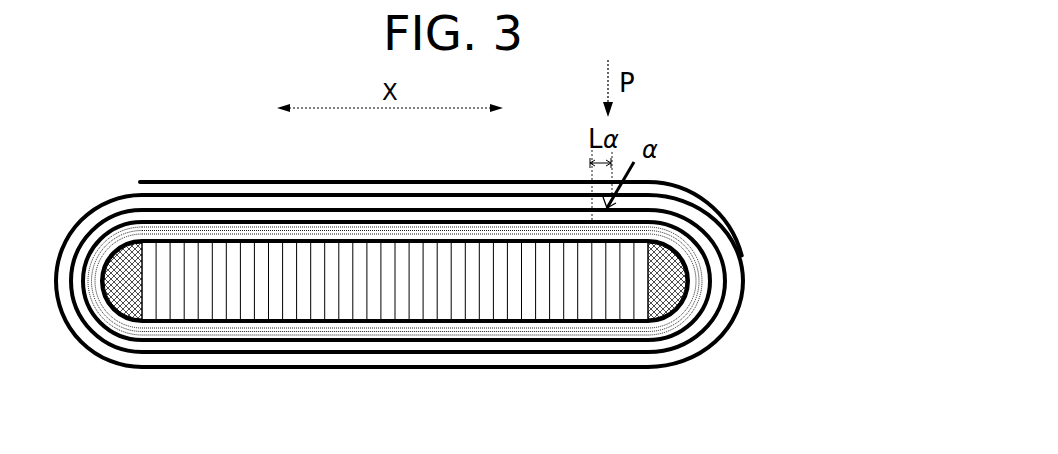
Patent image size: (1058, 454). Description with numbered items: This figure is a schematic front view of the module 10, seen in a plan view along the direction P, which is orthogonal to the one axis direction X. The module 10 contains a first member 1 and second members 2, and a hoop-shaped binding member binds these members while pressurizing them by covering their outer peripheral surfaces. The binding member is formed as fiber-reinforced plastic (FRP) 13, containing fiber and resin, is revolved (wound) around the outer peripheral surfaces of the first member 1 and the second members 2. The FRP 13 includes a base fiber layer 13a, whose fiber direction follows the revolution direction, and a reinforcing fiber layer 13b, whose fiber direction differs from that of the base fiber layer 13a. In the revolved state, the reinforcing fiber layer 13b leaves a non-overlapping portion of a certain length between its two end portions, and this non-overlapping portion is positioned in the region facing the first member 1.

The first member 1 is at (643, 382).
The second members 2 is at (138, 318).
The module 10 is at (720, 113).
The fiber-reinforced plastic (FRP) 13 is at (816, 166).
The base fiber layer 13a is at (700, 198).
The reinforcing fiber layer 13b is at (700, 226).